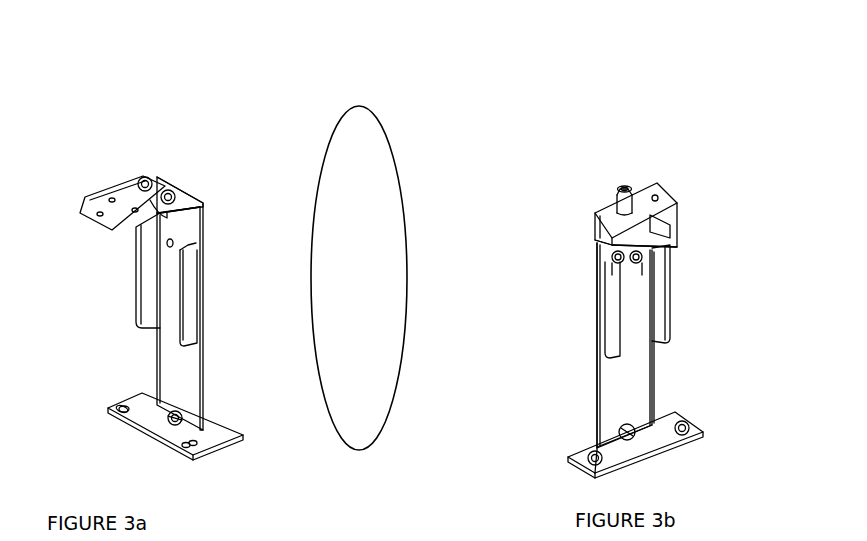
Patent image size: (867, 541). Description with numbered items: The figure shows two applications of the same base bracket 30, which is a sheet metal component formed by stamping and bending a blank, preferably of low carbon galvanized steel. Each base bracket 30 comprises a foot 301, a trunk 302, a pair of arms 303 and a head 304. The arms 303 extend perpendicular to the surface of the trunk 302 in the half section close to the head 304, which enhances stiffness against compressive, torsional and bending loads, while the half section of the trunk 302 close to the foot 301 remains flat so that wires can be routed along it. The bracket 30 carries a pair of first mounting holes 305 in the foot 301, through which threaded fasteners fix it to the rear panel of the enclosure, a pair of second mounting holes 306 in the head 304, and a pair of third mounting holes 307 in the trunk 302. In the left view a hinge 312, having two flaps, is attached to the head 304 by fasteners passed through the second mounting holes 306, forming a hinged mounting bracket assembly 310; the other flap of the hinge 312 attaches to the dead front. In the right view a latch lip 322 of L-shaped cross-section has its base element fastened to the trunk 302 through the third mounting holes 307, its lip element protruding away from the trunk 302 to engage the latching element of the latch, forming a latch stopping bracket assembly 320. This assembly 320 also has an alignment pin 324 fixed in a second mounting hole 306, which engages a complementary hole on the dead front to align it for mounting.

In FIG. 3A, the base bracket 30 is at (359, 106).
In FIG. 3A, the foot 301 is at (213, 440).
In FIG. 3B, the foot 301 is at (572, 455).
In FIG. 3A, the trunk 302 is at (198, 372).
In FIG. 3B, the trunk 302 is at (594, 384).
In FIG. 3A, the pair of arms 303 is at (133, 303).
In FIG. 3B, the pair of arms 303 is at (667, 313).
In FIG. 3A, the head 304 is at (190, 203).
In FIG. 3B, the head 304 is at (610, 214).
In FIG. 3A, the pair of first mounting holes 305 is at (185, 445).
In FIG. 3A, the pair of second mounting holes 306 is at (167, 208).
In FIG. 3A, the pair of third mounting holes 307 is at (170, 247).
In FIG. 3A, the hinged mounting bracket assembly 310 is at (148, 160).
In FIG. 3A, the hinge 312 is at (100, 215).
In FIG. 3B, the latch stopping bracket assembly 320 is at (648, 183).
In FIG. 3B, the latch lip 322 is at (678, 220).
In FIG. 3B, the alignment pin 324 is at (605, 187).